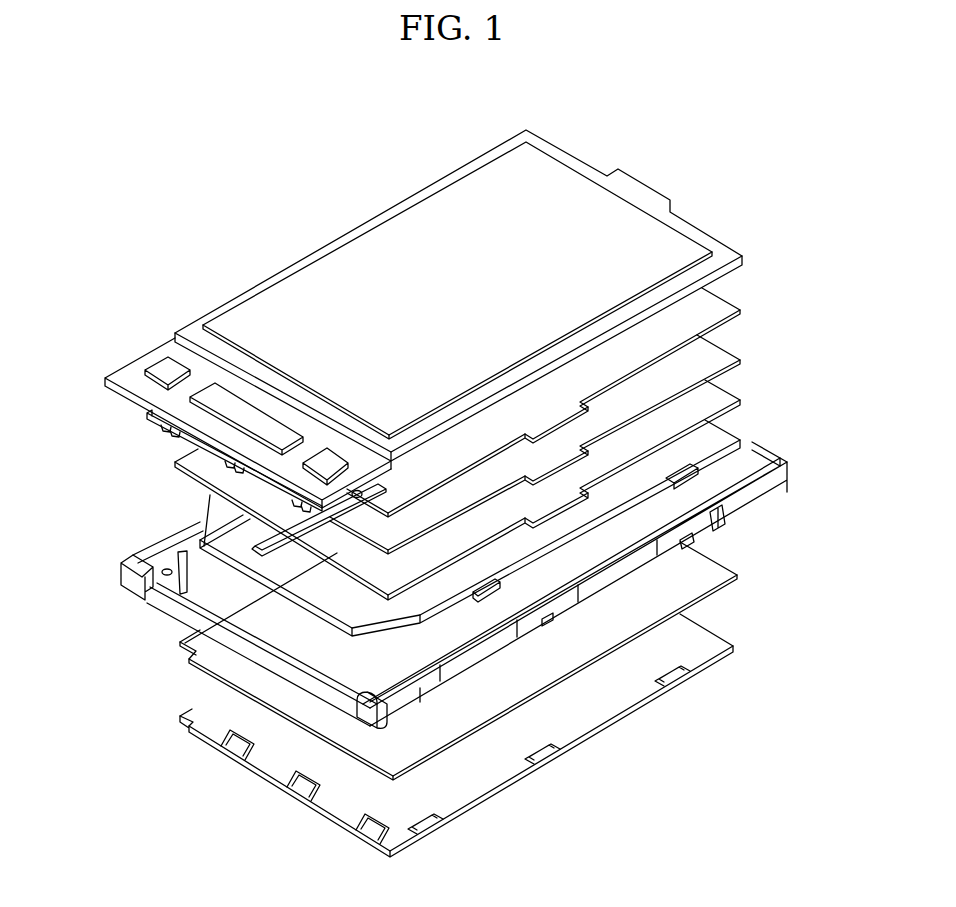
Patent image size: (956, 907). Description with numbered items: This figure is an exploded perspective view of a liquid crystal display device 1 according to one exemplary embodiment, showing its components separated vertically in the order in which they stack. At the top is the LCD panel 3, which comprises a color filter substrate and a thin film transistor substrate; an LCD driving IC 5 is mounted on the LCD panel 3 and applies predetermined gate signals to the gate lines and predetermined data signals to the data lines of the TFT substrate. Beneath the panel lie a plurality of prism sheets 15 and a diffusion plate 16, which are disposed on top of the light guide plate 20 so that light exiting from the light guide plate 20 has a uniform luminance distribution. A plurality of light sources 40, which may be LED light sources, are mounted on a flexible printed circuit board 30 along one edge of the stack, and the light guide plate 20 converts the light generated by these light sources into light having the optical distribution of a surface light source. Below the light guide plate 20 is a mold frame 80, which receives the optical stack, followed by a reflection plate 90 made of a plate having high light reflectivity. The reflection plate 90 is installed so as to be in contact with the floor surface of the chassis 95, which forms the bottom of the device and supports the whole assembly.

The liquid crystal display device 1 is at (303, 205).
The LCD panel 3 is at (627, 220).
The LCD driving IC 5 is at (207, 397).
The prism sheets 15 is at (721, 310).
The diffusion plate 16 is at (722, 398).
The light guide plate 20 is at (720, 437).
The flexible printed circuit board 30 is at (232, 560).
The light sources 40 is at (164, 427).
The mold frame 80 is at (752, 498).
The reflection plate 90 is at (717, 580).
The chassis 95 is at (700, 672).